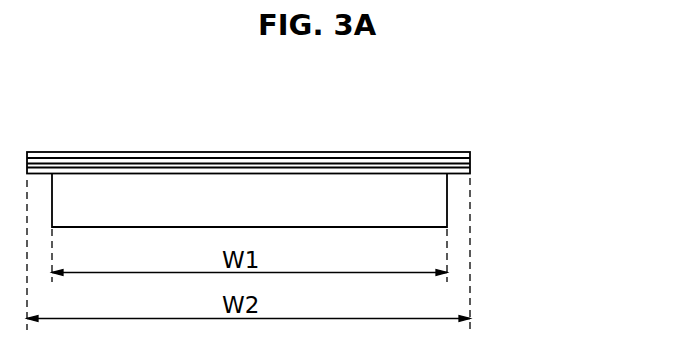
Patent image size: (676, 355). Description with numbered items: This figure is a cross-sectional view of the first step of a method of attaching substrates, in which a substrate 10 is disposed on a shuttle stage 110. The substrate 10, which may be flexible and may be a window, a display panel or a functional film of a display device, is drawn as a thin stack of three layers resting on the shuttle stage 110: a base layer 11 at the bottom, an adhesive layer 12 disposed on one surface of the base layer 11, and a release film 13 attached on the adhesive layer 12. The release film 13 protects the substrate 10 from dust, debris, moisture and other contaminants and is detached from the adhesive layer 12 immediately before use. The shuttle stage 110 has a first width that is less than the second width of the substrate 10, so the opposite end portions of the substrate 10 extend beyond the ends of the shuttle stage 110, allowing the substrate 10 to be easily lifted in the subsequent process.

The substrate 10 is at (317, 159).
The base layer 11 is at (470, 170).
The adhesive layer 12 is at (470, 161).
The release film 13 is at (470, 154).
The shuttle stage 110 is at (447, 210).